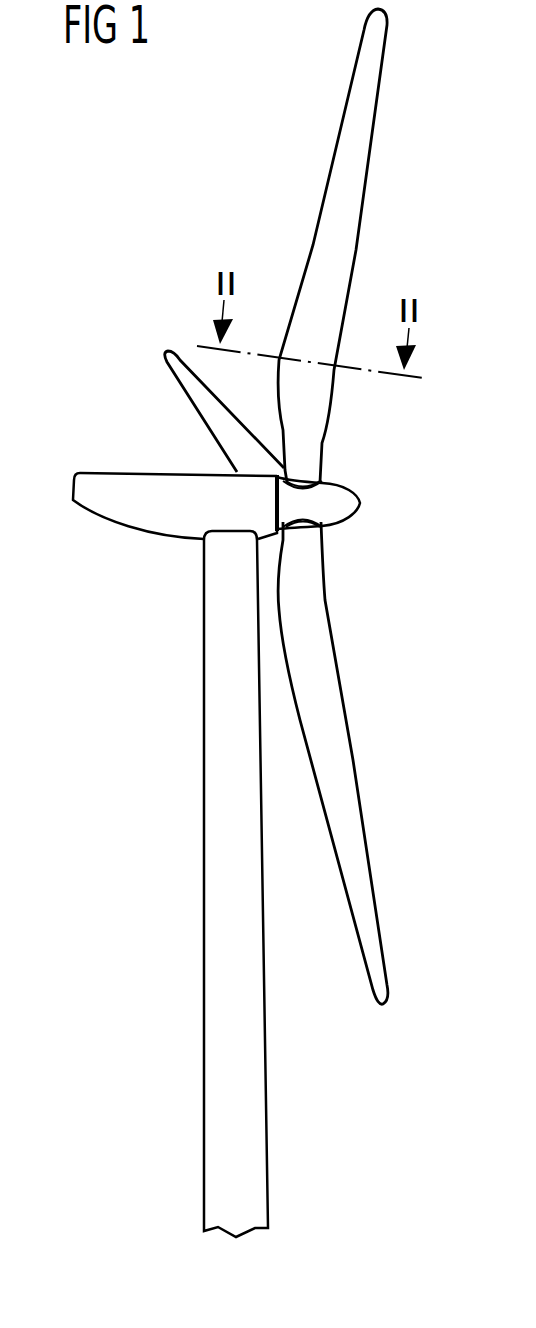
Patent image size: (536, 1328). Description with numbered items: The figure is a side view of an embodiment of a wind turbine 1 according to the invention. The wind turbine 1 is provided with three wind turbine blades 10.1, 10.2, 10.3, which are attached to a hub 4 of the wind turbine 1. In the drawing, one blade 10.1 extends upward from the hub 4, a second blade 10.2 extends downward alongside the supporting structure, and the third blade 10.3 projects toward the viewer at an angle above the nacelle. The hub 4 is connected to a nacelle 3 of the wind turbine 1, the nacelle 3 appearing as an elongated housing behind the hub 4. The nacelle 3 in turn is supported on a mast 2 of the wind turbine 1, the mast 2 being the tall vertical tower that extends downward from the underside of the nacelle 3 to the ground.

The wind turbine 1 is at (119, 307).
The mast 2 is at (215, 875).
The nacelle 3 is at (120, 470).
The hub 4 is at (356, 502).
The wind turbine blade 10.1 is at (343, 238).
The wind turbine blade 10.2 is at (327, 687).
The wind turbine blade 10.3 is at (165, 360).